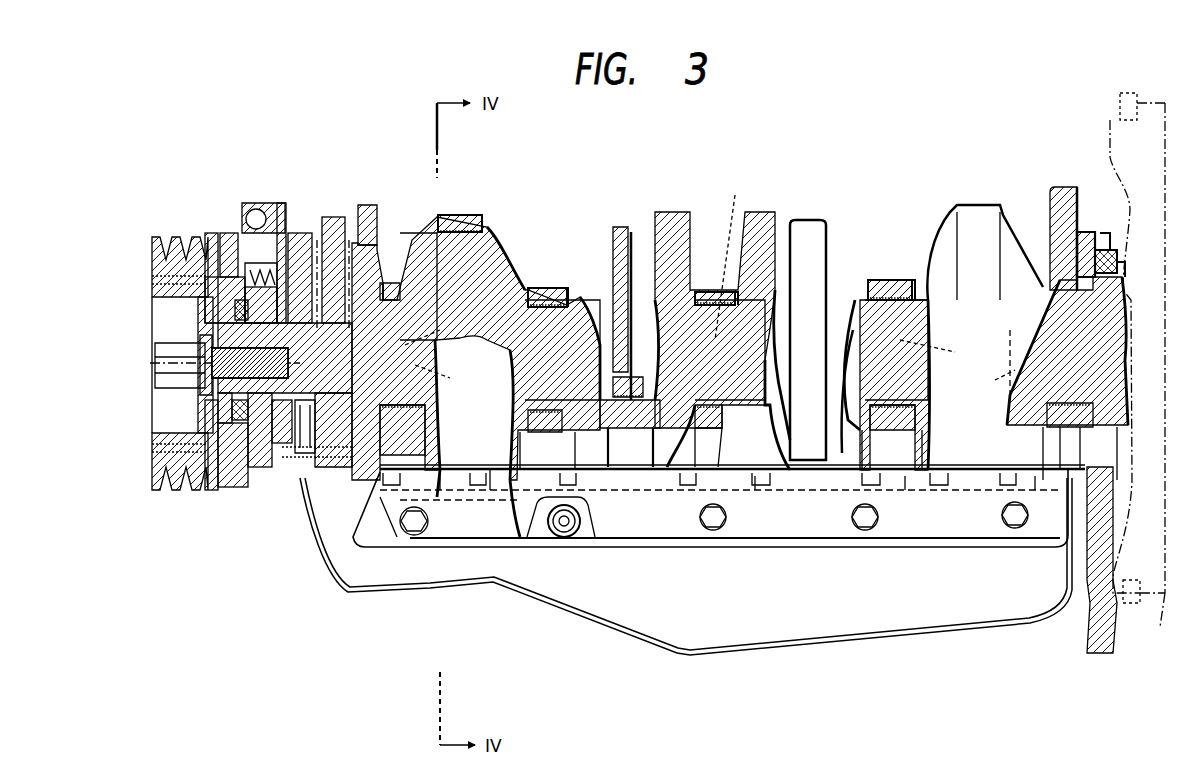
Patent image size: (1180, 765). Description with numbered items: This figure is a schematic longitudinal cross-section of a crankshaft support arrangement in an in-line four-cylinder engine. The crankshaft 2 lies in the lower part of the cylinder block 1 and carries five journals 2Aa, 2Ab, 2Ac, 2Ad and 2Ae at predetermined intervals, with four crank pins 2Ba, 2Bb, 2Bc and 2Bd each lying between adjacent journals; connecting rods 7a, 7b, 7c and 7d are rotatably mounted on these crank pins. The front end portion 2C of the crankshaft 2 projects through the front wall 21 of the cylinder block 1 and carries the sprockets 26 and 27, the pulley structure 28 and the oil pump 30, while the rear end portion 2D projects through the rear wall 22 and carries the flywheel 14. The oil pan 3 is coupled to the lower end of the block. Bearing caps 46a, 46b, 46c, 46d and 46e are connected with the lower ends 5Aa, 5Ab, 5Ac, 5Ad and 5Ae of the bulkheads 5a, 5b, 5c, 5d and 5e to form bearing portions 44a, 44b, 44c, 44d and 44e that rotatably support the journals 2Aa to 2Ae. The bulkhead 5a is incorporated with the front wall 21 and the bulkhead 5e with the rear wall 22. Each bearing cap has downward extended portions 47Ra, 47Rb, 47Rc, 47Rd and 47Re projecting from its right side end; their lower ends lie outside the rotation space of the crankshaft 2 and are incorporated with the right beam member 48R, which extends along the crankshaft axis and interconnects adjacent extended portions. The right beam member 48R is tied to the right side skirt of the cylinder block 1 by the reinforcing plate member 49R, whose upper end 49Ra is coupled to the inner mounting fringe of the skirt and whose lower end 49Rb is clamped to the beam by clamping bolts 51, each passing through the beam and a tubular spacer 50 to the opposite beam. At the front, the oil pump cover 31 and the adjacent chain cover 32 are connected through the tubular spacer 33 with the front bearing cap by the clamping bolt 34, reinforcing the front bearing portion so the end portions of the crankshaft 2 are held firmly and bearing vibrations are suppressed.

The cylinder block 1 is at (368, 200).
The crankshaft 2 is at (500, 240).
The journal 2Aa is at (423, 340).
The journal 2Ab is at (577, 297).
The journal 2Ac is at (750, 290).
The journal 2Ad is at (918, 270).
The journal 2Ae is at (1020, 385).
The crank pin 2Ba is at (458, 240).
The crank pin 2Bb is at (606, 330).
The crank pin 2Bc is at (822, 340).
The crank pin 2Bd is at (978, 260).
The front end portion 2C is at (215, 400).
The rear end portion 2D is at (1112, 365).
The oil pan 3 is at (703, 657).
The bulkhead 5a is at (385, 290).
The bulkhead 5b is at (537, 292).
The bulkhead 5c is at (700, 292).
The bulkhead 5d is at (875, 285).
The bulkhead 5e is at (1083, 232).
The lower end 5Aa is at (451, 374).
The lower end 5Ab is at (441, 344).
The lower end 5Ac is at (732, 256).
The lower end 5Ad is at (945, 352).
The lower end 5Ae is at (985, 377).
The connecting rod 7a is at (455, 215).
The connecting rod 7b is at (620, 235).
The connecting rod 7c is at (805, 250).
The connecting rod 7d is at (968, 213).
The flywheel 14 is at (1163, 612).
The front wall 21 is at (338, 310).
The rear wall 22 is at (1068, 290).
The sprocket 26 is at (275, 250).
The sprocket 27 is at (300, 287).
The pulley structure 28 is at (160, 470).
The oil pump 30 is at (225, 478).
The oil pump cover 31 is at (275, 480).
The chain cover 32 is at (258, 480).
The tubular spacer 33 is at (325, 475).
The clamping bolt 34 is at (292, 480).
The bearing portion 44a is at (380, 265).
The bearing portion 44b is at (558, 284).
The bearing portion 44c is at (714, 288).
The bearing portion 44d is at (888, 277).
The bearing portion 44e is at (1100, 295).
The bearing cap 46a is at (340, 470).
The bearing cap 46b is at (440, 495).
The bearing cap 46c is at (757, 495).
The bearing cap 46d is at (905, 495).
The bearing cap 46e is at (1035, 495).
The extended portion 47Ra is at (398, 460).
The extended portion 47Rb is at (542, 455).
The extended portion 47Rc is at (715, 450).
The extended portion 47Rd is at (910, 440).
The extended portion 47Re is at (1060, 478).
The right beam member 48R is at (470, 495).
The reinforcing plate member 49R is at (385, 522).
The upper end 49Ra is at (967, 472).
The lower end 49Rb is at (783, 525).
The tubular spacer 50 is at (575, 535).
The clamping bolt 51 is at (413, 527).